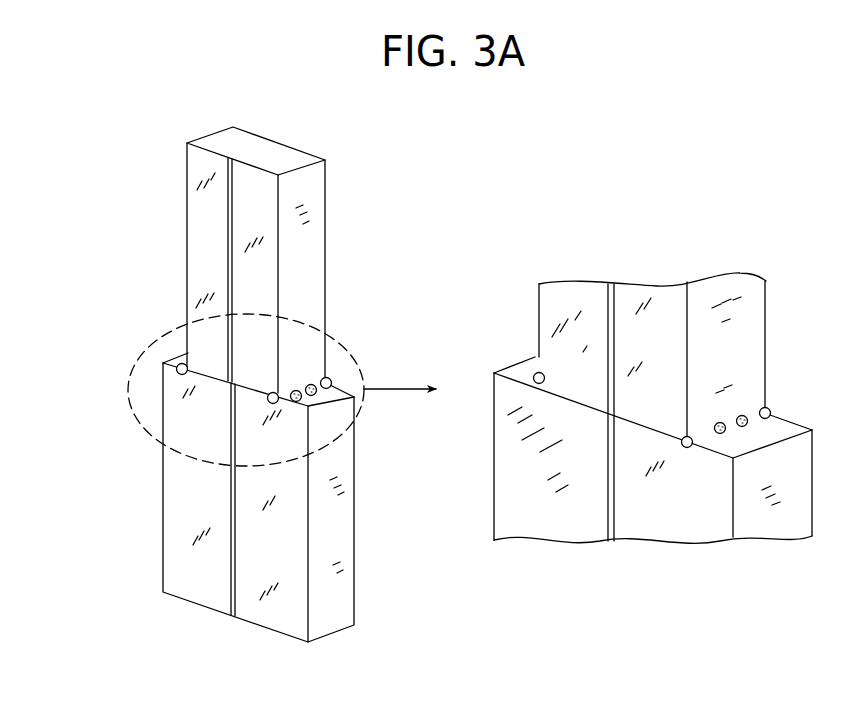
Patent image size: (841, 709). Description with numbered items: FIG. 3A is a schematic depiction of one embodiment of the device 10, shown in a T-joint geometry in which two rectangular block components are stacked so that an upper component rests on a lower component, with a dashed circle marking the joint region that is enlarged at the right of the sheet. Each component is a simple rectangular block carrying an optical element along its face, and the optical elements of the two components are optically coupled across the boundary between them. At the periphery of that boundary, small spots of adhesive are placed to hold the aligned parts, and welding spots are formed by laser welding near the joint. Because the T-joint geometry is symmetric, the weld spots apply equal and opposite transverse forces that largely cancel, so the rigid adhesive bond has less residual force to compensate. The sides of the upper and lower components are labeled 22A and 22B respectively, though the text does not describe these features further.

The device 10 is at (161, 105).
The upper panel module side 22A is at (329, 207).
The lower panel module side 22B is at (360, 592).